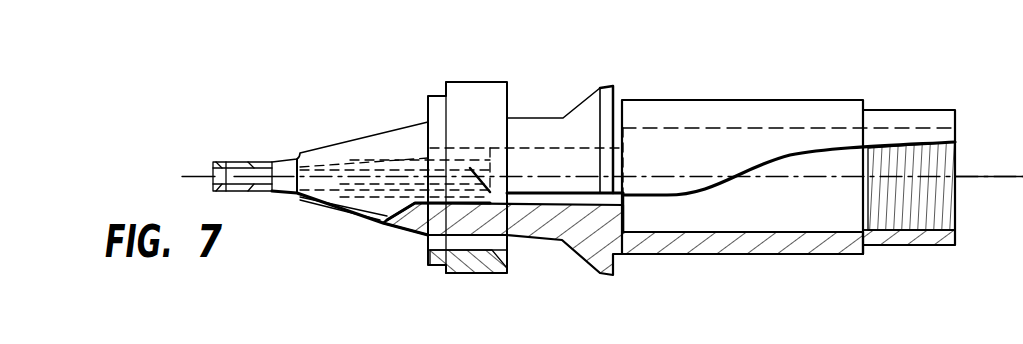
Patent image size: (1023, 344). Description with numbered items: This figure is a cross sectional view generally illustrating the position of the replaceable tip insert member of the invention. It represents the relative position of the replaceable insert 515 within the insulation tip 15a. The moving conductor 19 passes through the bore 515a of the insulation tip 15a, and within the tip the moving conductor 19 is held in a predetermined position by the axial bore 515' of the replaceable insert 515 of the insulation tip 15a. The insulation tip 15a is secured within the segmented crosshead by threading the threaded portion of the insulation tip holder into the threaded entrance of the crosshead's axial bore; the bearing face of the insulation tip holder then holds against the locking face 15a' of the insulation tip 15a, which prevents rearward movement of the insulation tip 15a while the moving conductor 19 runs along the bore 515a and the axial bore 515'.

The replaceable insert 515 is at (447, 167).
The axial bore of replaceable insert 515' is at (282, 158).
The insulation tip 15a is at (788, 152).
The locking face 15a' is at (636, 123).
The bore of insulation tip 515a is at (752, 215).
The moving conductor 19 is at (1001, 175).